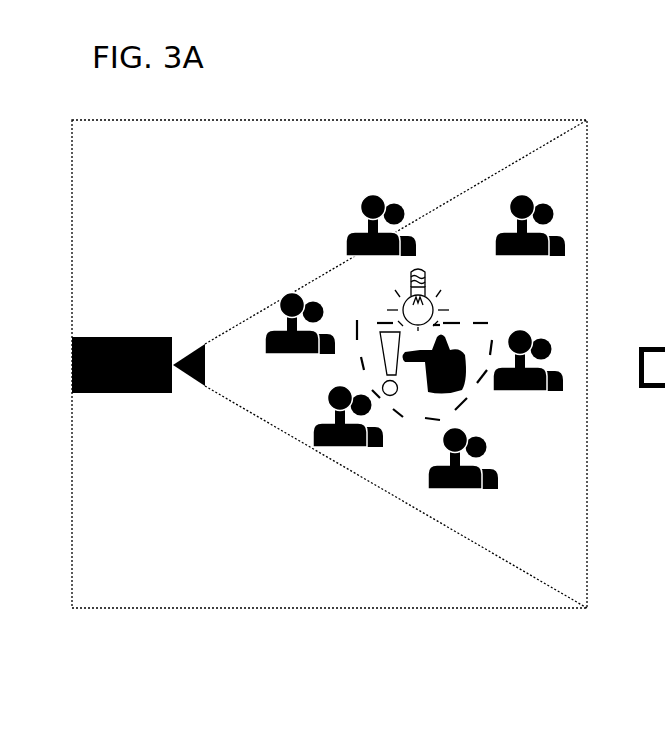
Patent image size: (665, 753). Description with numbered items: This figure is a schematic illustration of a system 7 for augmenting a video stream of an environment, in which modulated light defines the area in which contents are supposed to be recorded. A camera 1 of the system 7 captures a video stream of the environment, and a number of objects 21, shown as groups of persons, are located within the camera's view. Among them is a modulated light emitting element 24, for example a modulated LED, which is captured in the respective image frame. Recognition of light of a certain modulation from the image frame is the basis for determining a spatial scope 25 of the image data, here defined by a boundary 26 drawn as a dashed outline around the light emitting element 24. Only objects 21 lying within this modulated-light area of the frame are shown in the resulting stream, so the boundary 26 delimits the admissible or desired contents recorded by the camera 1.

The camera 1 is at (138, 344).
The system 7 is at (171, 285).
The objects 21 is at (430, 388).
The modulated light emitting element 24 is at (428, 305).
The spatial scope 25 is at (470, 333).
The boundary 26 is at (455, 322).